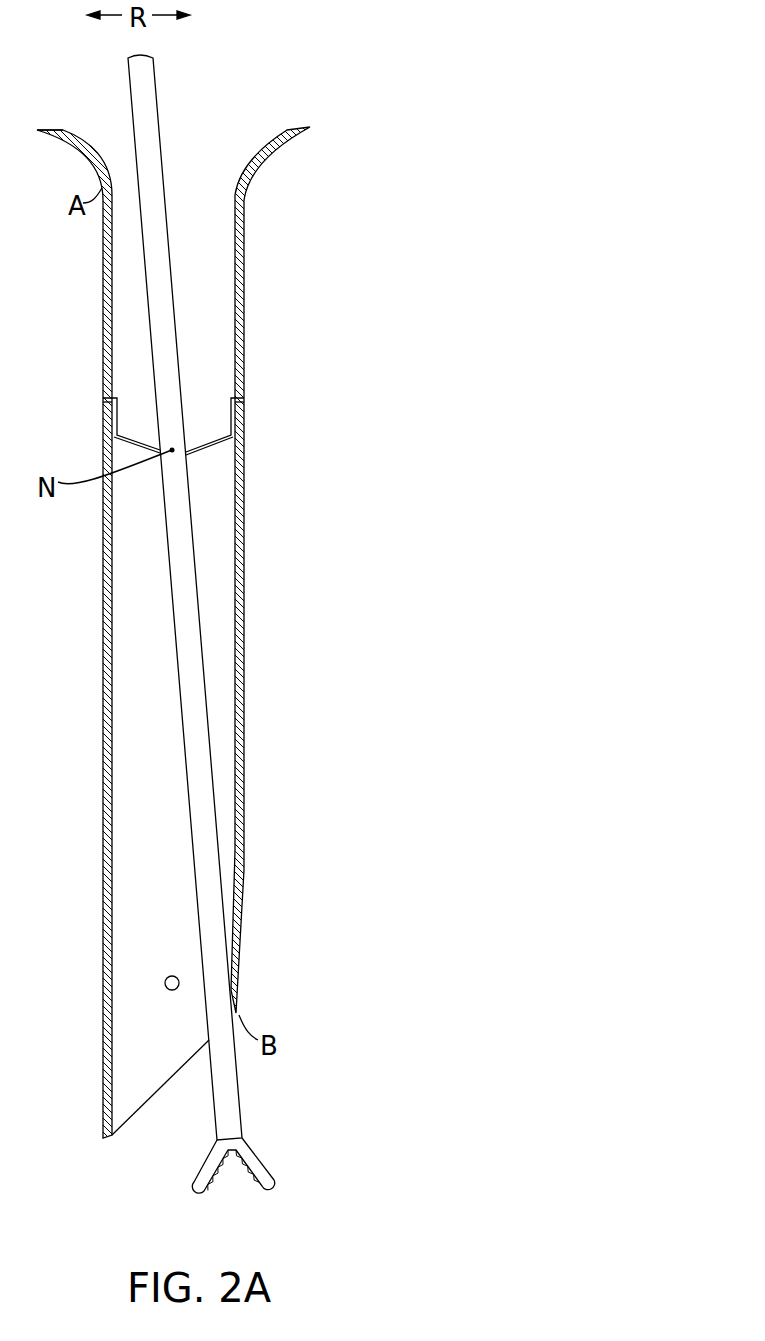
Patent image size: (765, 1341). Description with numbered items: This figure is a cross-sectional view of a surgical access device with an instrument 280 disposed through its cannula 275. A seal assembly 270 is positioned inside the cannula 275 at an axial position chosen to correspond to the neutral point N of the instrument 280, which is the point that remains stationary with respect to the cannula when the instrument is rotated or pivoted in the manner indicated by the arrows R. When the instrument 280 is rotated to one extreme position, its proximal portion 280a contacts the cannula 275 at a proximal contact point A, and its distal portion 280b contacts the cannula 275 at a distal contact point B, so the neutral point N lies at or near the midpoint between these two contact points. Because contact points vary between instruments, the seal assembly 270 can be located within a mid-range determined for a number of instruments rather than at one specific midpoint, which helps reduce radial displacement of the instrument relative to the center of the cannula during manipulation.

The cannula 275 is at (255, 316).
The proximal portion of the instrument 280a is at (180, 176).
The distal portion of the instrument 280b is at (257, 1001).
The seal assembly 270 is at (223, 447).
The instrument 280 is at (230, 1088).